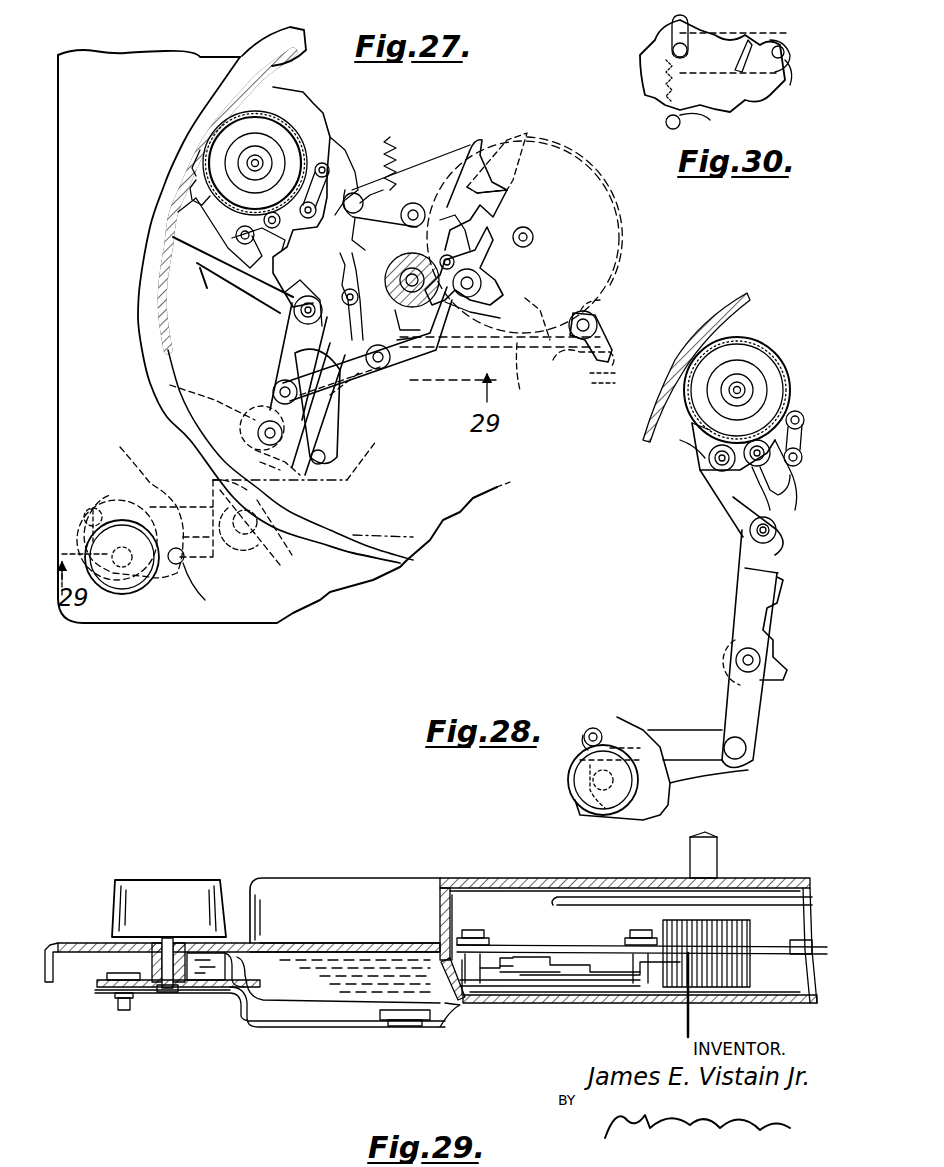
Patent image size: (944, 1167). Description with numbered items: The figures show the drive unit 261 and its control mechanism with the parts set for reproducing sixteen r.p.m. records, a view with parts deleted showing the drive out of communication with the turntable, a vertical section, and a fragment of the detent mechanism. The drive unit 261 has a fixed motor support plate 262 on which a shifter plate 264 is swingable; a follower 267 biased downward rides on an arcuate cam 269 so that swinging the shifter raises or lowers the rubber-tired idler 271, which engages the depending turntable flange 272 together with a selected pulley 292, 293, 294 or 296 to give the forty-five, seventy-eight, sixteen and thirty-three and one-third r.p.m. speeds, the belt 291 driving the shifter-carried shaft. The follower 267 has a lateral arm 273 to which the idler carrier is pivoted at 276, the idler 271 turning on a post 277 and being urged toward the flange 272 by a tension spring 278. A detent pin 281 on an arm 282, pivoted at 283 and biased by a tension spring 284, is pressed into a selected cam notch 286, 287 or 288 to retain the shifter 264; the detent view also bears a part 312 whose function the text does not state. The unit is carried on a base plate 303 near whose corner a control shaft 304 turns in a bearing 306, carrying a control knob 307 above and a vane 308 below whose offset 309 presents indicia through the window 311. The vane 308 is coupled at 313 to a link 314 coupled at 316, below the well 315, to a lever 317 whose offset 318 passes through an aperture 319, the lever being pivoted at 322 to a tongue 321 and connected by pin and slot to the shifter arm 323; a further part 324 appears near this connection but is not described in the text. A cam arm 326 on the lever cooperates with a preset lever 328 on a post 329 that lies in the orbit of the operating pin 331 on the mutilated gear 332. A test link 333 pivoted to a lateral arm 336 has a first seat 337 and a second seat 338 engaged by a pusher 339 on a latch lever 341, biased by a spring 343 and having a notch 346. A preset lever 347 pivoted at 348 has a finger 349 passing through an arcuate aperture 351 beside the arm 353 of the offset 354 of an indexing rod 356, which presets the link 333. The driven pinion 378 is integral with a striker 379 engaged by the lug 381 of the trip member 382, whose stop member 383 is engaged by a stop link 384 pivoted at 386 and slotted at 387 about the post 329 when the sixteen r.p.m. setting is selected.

In FIG. 27, the drive unit 261 is at (245, 101).
In FIG. 28, the drive unit 261 is at (748, 328).
In FIG. 27, the motor support plate 262 is at (192, 229).
In FIG. 27, the shifter plate 264 is at (222, 214).
In FIG. 30, the shifter plate 264 is at (738, 90).
In FIG. 28, the shifter plate 264 is at (698, 448).
In FIG. 27, the follower 267 is at (306, 220).
In FIG. 28, the follower 267 is at (788, 478).
In FIG. 27, the cam 269 is at (277, 230).
In FIG. 27, the idler 271 is at (226, 150).
In FIG. 28, the idler 271 is at (752, 345).
In FIG. 27, the turntable flange 272 is at (192, 176).
In FIG. 28, the turntable flange 272 is at (700, 333).
In FIG. 29, the turntable flange 272 is at (252, 878).
In FIG. 27, the lateral arm 273 is at (336, 165).
In FIG. 28, the lateral arm 273 is at (800, 452).
In FIG. 27, the pivot 276 is at (300, 152).
In FIG. 28, the pivot 276 is at (798, 410).
In FIG. 27, the post 277 is at (250, 160).
In FIG. 28, the post 277 is at (742, 387).
In FIG. 27, the tension spring 278 is at (205, 212).
In FIG. 30, the detent pin 281 is at (672, 50).
In FIG. 30, the arm 282 is at (804, 81).
In FIG. 30, the pivot 283 is at (782, 48).
In FIG. 30, the tension spring 284 is at (700, 128).
In FIG. 30, the cam notch 286 is at (660, 62).
In FIG. 30, the cam notch 287 is at (672, 18).
In FIG. 30, the cam notch 288 is at (781, 39).
In FIG. 27, the belt 291 is at (270, 272).
In FIG. 28, the belt 291 is at (740, 470).
In FIG. 27, the pulley 292 is at (262, 275).
In FIG. 28, the pulley 292 is at (712, 470).
In FIG. 28, the pulley 293 is at (685, 440).
In FIG. 27, the pulley 294 is at (293, 308).
In FIG. 28, the pulley 294 is at (790, 510).
In FIG. 28, the pulley 296 is at (775, 500).
In FIG. 27, the base plate 303 is at (272, 623).
In FIG. 29, the base plate 303 is at (80, 940).
In FIG. 27, the control shaft 304 is at (115, 483).
In FIG. 28, the control shaft 304 is at (600, 815).
In FIG. 29, the control shaft 304 is at (168, 992).
In FIG. 29, the bearing 306 is at (150, 950).
In FIG. 27, the control knob 307 is at (128, 595).
In FIG. 28, the control knob 307 is at (590, 790).
In FIG. 29, the control knob 307 is at (170, 880).
In FIG. 27, the vane or indicator and crank plate 308 is at (134, 501).
In FIG. 28, the vane or indicator and crank plate 308 is at (672, 788).
In FIG. 29, the vane or indicator and crank plate 308 is at (212, 993).
In FIG. 29, the offset 309 is at (268, 1002).
In FIG. 27, the window 311 is at (209, 588).
In FIG. 28, the window 311 is at (726, 771).
In FIG. 29, the window 311 is at (285, 943).
In FIG. 30, the slot 312 is at (745, 40).
In FIG. 27, the pivotal coupling 313 is at (82, 510).
In FIG. 28, the pivotal coupling 313 is at (588, 730).
In FIG. 29, the pivotal coupling 313 is at (122, 1012).
In FIG. 27, the link 314 is at (240, 560).
In FIG. 28, the link 314 is at (700, 735).
In FIG. 29, the link 314 is at (262, 1030).
In FIG. 29, the depression or well 315 is at (535, 995).
In FIG. 27, the pivotal coupling 316 is at (262, 545).
In FIG. 28, the pivotal coupling 316 is at (748, 748).
In FIG. 29, the pivotal coupling 316 is at (404, 1027).
In FIG. 27, the lever 317 is at (278, 400).
In FIG. 28, the lever 317 is at (745, 596).
In FIG. 29, the lever 317 is at (440, 1010).
In FIG. 27, the offset 318 is at (255, 460).
In FIG. 28, the offset 318 is at (762, 685).
In FIG. 29, the offset 318 is at (465, 1010).
In FIG. 27, the aperture 319 is at (240, 415).
In FIG. 28, the aperture 319 is at (730, 648).
In FIG. 27, the tongue 321 is at (186, 394).
In FIG. 27, the pivot 322 is at (258, 432).
In FIG. 28, the pivot 322 is at (735, 662).
In FIG. 29, the pivot 322 is at (548, 945).
In FIG. 27, the arm 323 is at (292, 325).
In FIG. 28, the arm 323 is at (725, 500).
In FIG. 27, the pivot pin 324 is at (298, 332).
In FIG. 28, the pivot pin 324 is at (750, 540).
In FIG. 29, the cam arm 326 is at (504, 957).
In FIG. 27, the preset lever 328 is at (368, 385).
In FIG. 29, the preset lever 328 is at (566, 992).
In FIG. 27, the post 329 is at (390, 372).
In FIG. 29, the post 329 is at (632, 940).
In FIG. 27, the operating pin 331 is at (468, 148).
In FIG. 27, the mutilated gear 332 is at (612, 243).
In FIG. 29, the mutilated gear 332 is at (808, 1005).
In FIG. 27, the gauging or test link 333 is at (330, 422).
In FIG. 29, the gauging or test link 333 is at (592, 988).
In FIG. 27, the lateral arm 336 is at (300, 492).
In FIG. 27, the first seat 337 is at (403, 222).
In FIG. 27, the second seat 338 is at (345, 287).
In FIG. 27, the pusher 339 is at (378, 165).
In FIG. 27, the latch lever 341 is at (418, 175).
In FIG. 27, the spring 343 is at (398, 142).
In FIG. 27, the notch 346 is at (492, 185).
In FIG. 27, the preset lever 347 is at (595, 315).
In FIG. 27, the pivot 348 is at (600, 300).
In FIG. 27, the finger 349 is at (571, 362).
In FIG. 27, the arcuate clearance aperture 351 is at (610, 345).
In FIG. 27, the arm portion 353 is at (542, 306).
In FIG. 27, the offset 354 is at (611, 387).
In FIG. 27, the indexing rod 356 is at (535, 370).
In FIG. 29, the indexing rod 356 is at (686, 1030).
In FIG. 27, the driven pinion 378 is at (400, 291).
In FIG. 29, the driven pinion 378 is at (720, 1008).
In FIG. 27, the striker 379 is at (510, 178).
In FIG. 27, the upright lug 381 is at (465, 226).
In FIG. 27, the trip member 382 is at (480, 290).
In FIG. 29, the trip member 382 is at (800, 940).
In FIG. 27, the stop member 383 is at (488, 265).
In FIG. 29, the stop member 383 is at (760, 950).
In FIG. 27, the stop link 384 is at (455, 314).
In FIG. 29, the stop link 384 is at (512, 955).
In FIG. 27, the pivot 386 is at (278, 380).
In FIG. 29, the pivot 386 is at (476, 930).
In FIG. 27, the slot 387 is at (430, 349).